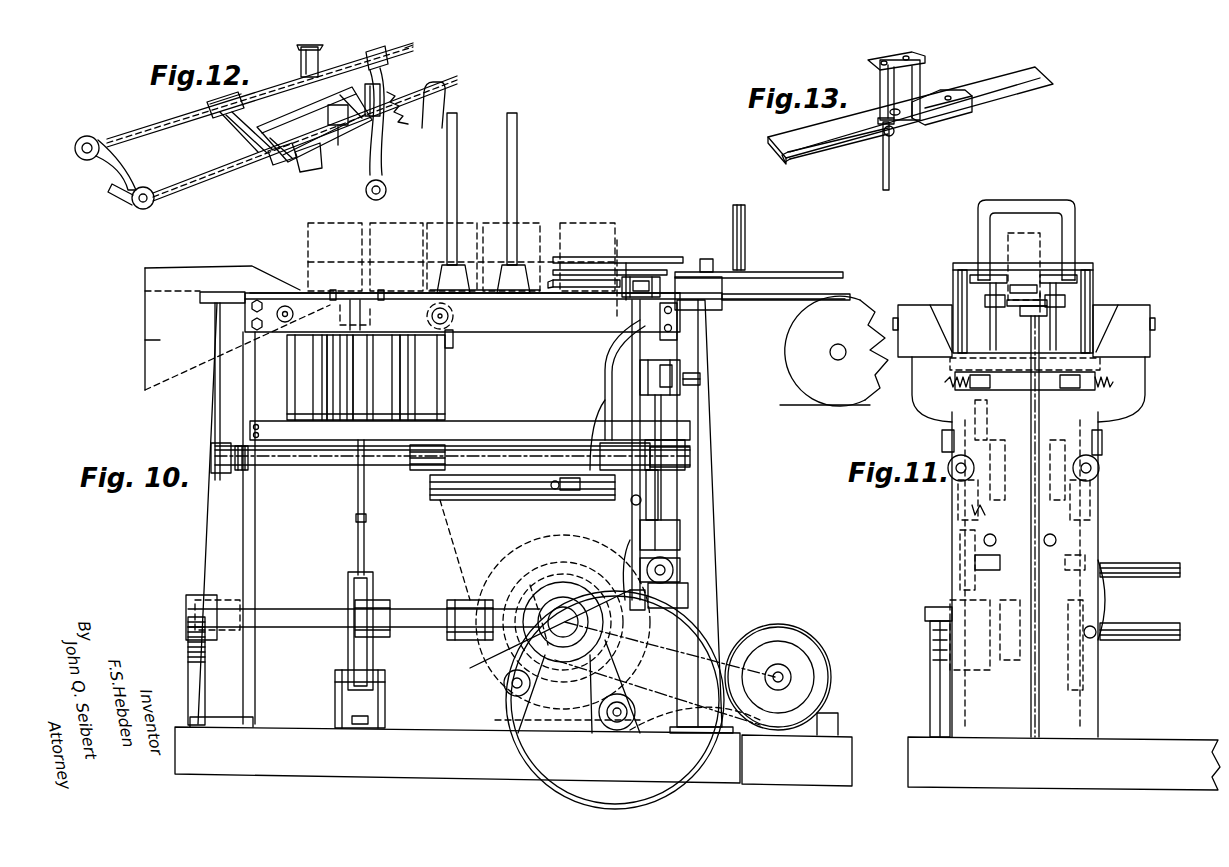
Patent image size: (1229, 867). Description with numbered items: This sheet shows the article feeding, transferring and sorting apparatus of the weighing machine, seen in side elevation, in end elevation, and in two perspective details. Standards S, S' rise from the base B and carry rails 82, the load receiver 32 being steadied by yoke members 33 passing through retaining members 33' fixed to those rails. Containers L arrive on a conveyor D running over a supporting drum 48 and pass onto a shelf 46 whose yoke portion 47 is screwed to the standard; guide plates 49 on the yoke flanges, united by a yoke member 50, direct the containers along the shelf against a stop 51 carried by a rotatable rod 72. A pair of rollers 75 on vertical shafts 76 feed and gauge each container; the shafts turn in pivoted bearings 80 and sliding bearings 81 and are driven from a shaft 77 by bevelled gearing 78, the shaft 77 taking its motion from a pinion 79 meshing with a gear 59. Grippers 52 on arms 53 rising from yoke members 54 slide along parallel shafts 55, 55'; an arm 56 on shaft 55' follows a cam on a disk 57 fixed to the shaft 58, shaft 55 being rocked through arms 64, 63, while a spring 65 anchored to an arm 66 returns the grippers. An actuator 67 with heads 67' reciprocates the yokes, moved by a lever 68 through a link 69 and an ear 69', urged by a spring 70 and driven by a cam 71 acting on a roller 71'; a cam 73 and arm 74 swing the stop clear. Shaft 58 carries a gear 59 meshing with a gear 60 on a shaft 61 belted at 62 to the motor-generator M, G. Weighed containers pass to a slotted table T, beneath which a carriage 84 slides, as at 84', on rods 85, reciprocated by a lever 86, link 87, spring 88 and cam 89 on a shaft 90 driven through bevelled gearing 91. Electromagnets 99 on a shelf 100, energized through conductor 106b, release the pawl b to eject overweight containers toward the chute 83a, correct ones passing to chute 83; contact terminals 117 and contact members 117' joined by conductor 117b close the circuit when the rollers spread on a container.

In FIG. 10, the load receiver 32 is at (485, 312).
In FIG. 10, the yoke members 33 is at (482, 189).
In FIG. 10, the retaining members 33' is at (481, 297).
In FIG. 13, the shelf 46 is at (990, 98).
In FIG. 10, the shelf 46 is at (760, 302).
In FIG. 11, the shelf 46 is at (1048, 285).
In FIG. 13, the yoke portion 47 is at (925, 100).
In FIG. 10, the yoke portion 47 is at (700, 290).
In FIG. 11, the yoke portion 47 is at (1055, 300).
In FIG. 10, the supporting drum 48 is at (841, 368).
In FIG. 10, the plates 49 is at (775, 272).
In FIG. 11, the plates 49 is at (960, 270).
In FIG. 10, the yoke member 50 is at (740, 205).
In FIG. 11, the yoke member 50 is at (1040, 202).
In FIG. 13, the stop 51 is at (790, 162).
In FIG. 10, the stop 51 is at (575, 292).
In FIG. 11, the stop 51 is at (1027, 292).
In FIG. 10, the article engaging and gripping members 52 is at (473, 247).
In FIG. 11, the article engaging and gripping members 52 is at (968, 262).
In FIG. 12, the arms 53 is at (300, 52).
In FIG. 10, the arms 53 is at (606, 378).
In FIG. 11, the arms 53 is at (957, 292).
In FIG. 12, the yoke members 54 is at (262, 132).
In FIG. 10, the yoke members 54 is at (482, 498).
In FIG. 11, the yoke members 54 is at (955, 500).
In FIG. 12, the shaft 55 is at (305, 153).
In FIG. 10, the shaft 55 is at (452, 471).
In FIG. 11, the shaft 55 is at (1005, 481).
In FIG. 12, the shaft 55' is at (249, 95).
In FIG. 11, the shaft 55' is at (1120, 472).
In FIG. 12, the arm 56 is at (410, 48).
In FIG. 10, the arm 56 is at (700, 508).
In FIG. 11, the arm 56 is at (1105, 562).
In FIG. 10, the disk 57 is at (605, 548).
In FIG. 11, the disk 57 is at (1085, 672).
In FIG. 10, the shaft 58 is at (480, 655).
In FIG. 11, the shaft 58 is at (1148, 624).
In FIG. 10, the gear 59 is at (540, 700).
In FIG. 10, the gear 60 is at (645, 732).
In FIG. 10, the shaft 61 is at (612, 725).
In FIG. 10, the belt 62 is at (748, 645).
In FIG. 12, the arm 63 is at (132, 203).
In FIG. 10, the arm 63 is at (212, 448).
In FIG. 11, the arm 63 is at (1038, 470).
In FIG. 12, the arm 64 is at (102, 165).
In FIG. 11, the arm 64 is at (1090, 505).
In FIG. 12, the spring 65 is at (398, 118).
In FIG. 10, the spring 65 is at (686, 455).
In FIG. 11, the spring 65 is at (965, 553).
In FIG. 12, the arm 66 is at (447, 108).
In FIG. 10, the arm 66 is at (660, 490).
In FIG. 11, the arm 66 is at (965, 505).
In FIG. 12, the actuator 67 is at (243, 154).
In FIG. 11, the actuator 67 is at (1133, 459).
In FIG. 12, the heads 67' is at (225, 142).
In FIG. 10, the heads 67' is at (582, 429).
In FIG. 10, the lever 68 is at (430, 530).
In FIG. 12, the link connection 69 is at (339, 141).
In FIG. 10, the link connection 69 is at (477, 501).
In FIG. 11, the link connection 69 is at (1100, 460).
In FIG. 10, the ear 69' is at (617, 447).
In FIG. 11, the ear 69' is at (1007, 470).
In FIG. 10, the spring 70 is at (530, 560).
In FIG. 11, the spring 70 is at (950, 640).
In FIG. 10, the cam 71 is at (554, 698).
In FIG. 11, the cam 71 is at (920, 679).
In FIG. 10, the following roller 71' is at (527, 629).
In FIG. 11, the following roller 71' is at (921, 669).
In FIG. 13, the rod 72 is at (890, 175).
In FIG. 10, the rod 72 is at (640, 320).
In FIG. 11, the rod 72 is at (942, 440).
In FIG. 10, the cam 73 is at (590, 640).
In FIG. 11, the cam 73 is at (980, 665).
In FIG. 10, the arm 74 is at (563, 613).
In FIG. 11, the arm 74 is at (925, 614).
In FIG. 10, the rollers 75 is at (660, 270).
In FIG. 11, the rollers 75 is at (985, 300).
In FIG. 10, the vertical shafts 76 is at (662, 410).
In FIG. 11, the vertical shafts 76 is at (988, 338).
In FIG. 10, the shaft 77 is at (690, 580).
In FIG. 11, the shaft 77 is at (1117, 607).
In FIG. 10, the bevelled gearing 78 is at (675, 562).
In FIG. 11, the bevelled gearing 78 is at (975, 545).
In FIG. 10, the pinion 79 is at (676, 585).
In FIG. 10, the bearings 80 is at (682, 528).
In FIG. 11, the bearings 80 is at (1146, 510).
In FIG. 10, the bearings 81 is at (687, 343).
In FIG. 11, the bearings 81 is at (950, 365).
In FIG. 10, the rails 82 is at (525, 325).
In FIG. 11, the rails 82 is at (930, 325).
In FIG. 10, the chute 83 is at (150, 277).
In FIG. 10, the chute 83a is at (131, 337).
In FIG. 10, the carriage 84 is at (458, 344).
In FIG. 10, the slidable mounting 84' is at (211, 386).
In FIG. 10, the rods 85 is at (282, 306).
In FIG. 10, the lever 86 is at (357, 558).
In FIG. 10, the link 87 is at (365, 330).
In FIG. 10, the spring 88 is at (355, 518).
In FIG. 10, the cam 89 is at (350, 648).
In FIG. 10, the shaft 90 is at (410, 612).
In FIG. 10, the bevelled gearing 91 is at (500, 570).
In FIG. 10, the electromagnets 99 is at (312, 382).
In FIG. 10, the shelf 100 is at (495, 430).
In FIG. 11, the shelf 100 is at (940, 448).
In FIG. 11, the conductor 106b is at (1143, 403).
In FIG. 10, the contact terminals 117 is at (718, 374).
In FIG. 11, the contact terminals 117 is at (1063, 360).
In FIG. 10, the contact member 117' is at (707, 365).
In FIG. 11, the contact member 117' is at (1105, 353).
In FIG. 11, the conductor 117b is at (1003, 420).
In FIG. 10, the base B is at (457, 755).
In FIG. 11, the base B is at (1064, 763).
In FIG. 10, the standard S is at (216, 515).
In FIG. 10, the standard S' is at (690, 450).
In FIG. 11, the standard S' is at (995, 570).
In FIG. 10, the containers L is at (310, 248).
In FIG. 11, the containers L is at (1024, 266).
In FIG. 10, the table T is at (395, 285).
In FIG. 10, the pawl b is at (357, 280).
In FIG. 10, the conveyor D is at (840, 298).
In FIG. 10, the motor M is at (800, 630).
In FIG. 10, the generator G is at (805, 655).